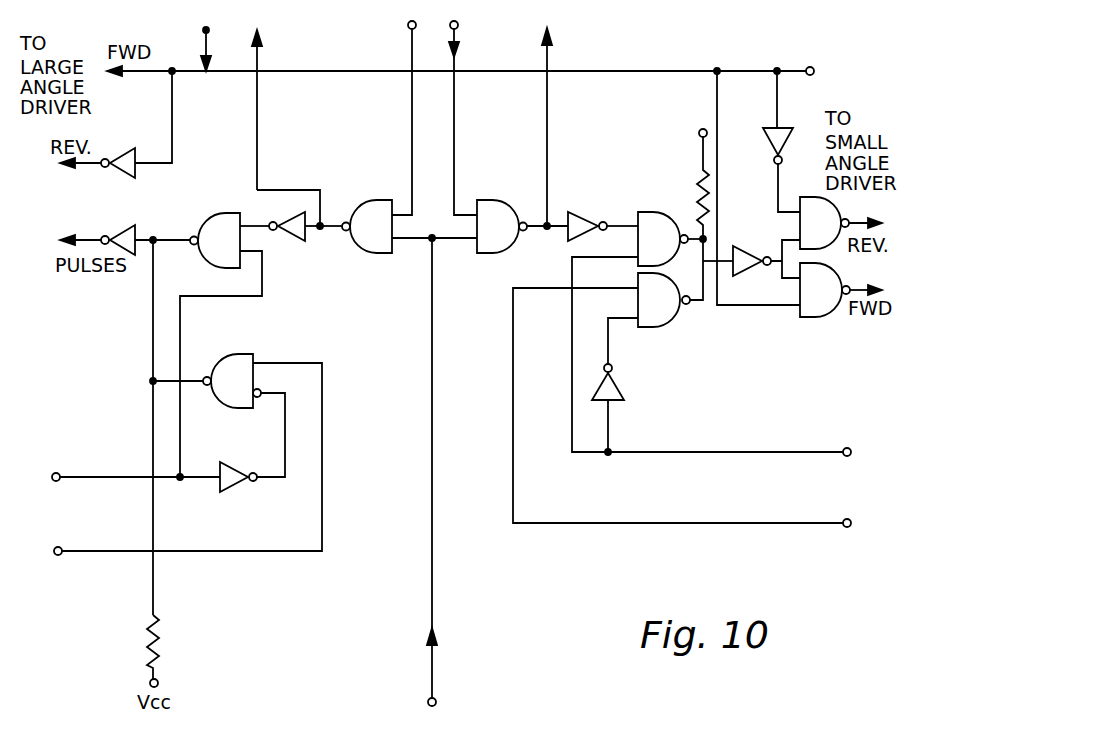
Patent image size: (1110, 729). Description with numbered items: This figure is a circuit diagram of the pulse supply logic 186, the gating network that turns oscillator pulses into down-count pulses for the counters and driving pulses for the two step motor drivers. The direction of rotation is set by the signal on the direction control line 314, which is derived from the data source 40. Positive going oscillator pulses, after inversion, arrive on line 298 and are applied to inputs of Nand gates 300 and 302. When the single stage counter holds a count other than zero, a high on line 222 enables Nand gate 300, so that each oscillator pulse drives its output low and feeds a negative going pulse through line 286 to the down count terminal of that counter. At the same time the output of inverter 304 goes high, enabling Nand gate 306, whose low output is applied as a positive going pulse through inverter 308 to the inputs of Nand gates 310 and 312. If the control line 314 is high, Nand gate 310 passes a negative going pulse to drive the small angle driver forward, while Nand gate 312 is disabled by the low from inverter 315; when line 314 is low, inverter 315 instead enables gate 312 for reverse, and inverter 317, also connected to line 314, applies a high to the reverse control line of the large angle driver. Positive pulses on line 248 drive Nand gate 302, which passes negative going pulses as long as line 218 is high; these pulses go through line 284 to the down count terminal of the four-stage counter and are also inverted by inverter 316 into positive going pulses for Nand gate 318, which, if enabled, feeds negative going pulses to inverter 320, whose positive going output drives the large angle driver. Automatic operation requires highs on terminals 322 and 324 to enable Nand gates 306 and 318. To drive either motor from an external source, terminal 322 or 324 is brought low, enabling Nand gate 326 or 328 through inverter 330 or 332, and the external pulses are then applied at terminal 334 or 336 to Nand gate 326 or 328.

The data source 40 is at (212, 48).
The pulse supply logic 186 is at (578, 547).
The line 218 is at (412, 120).
The line 222 is at (456, 147).
The line 248 is at (433, 570).
The line 284 is at (258, 137).
The line 286 is at (548, 115).
The line 298 is at (457, 242).
The Nand gate 300 is at (510, 240).
The Nand gate 302 is at (378, 246).
The inverter 304 is at (583, 213).
The Nand gate 306 is at (664, 226).
The inverter 308 is at (757, 238).
The Nand gate 310 is at (813, 312).
The Nand gate 312 is at (800, 204).
The direction control line 314 is at (600, 71).
The inverter 315 is at (775, 125).
The inverter 316 is at (297, 233).
The inverter 317 is at (128, 172).
The Nand gate 318 is at (220, 250).
The inverter 320 is at (128, 252).
The terminal 322 is at (869, 425).
The terminal 324 is at (57, 470).
The Nand gate 326 is at (657, 325).
The Nand gate 328 is at (243, 398).
The inverter 330 is at (622, 383).
The inverter 332 is at (233, 488).
The terminal 334 is at (857, 528).
The terminal 336 is at (58, 560).